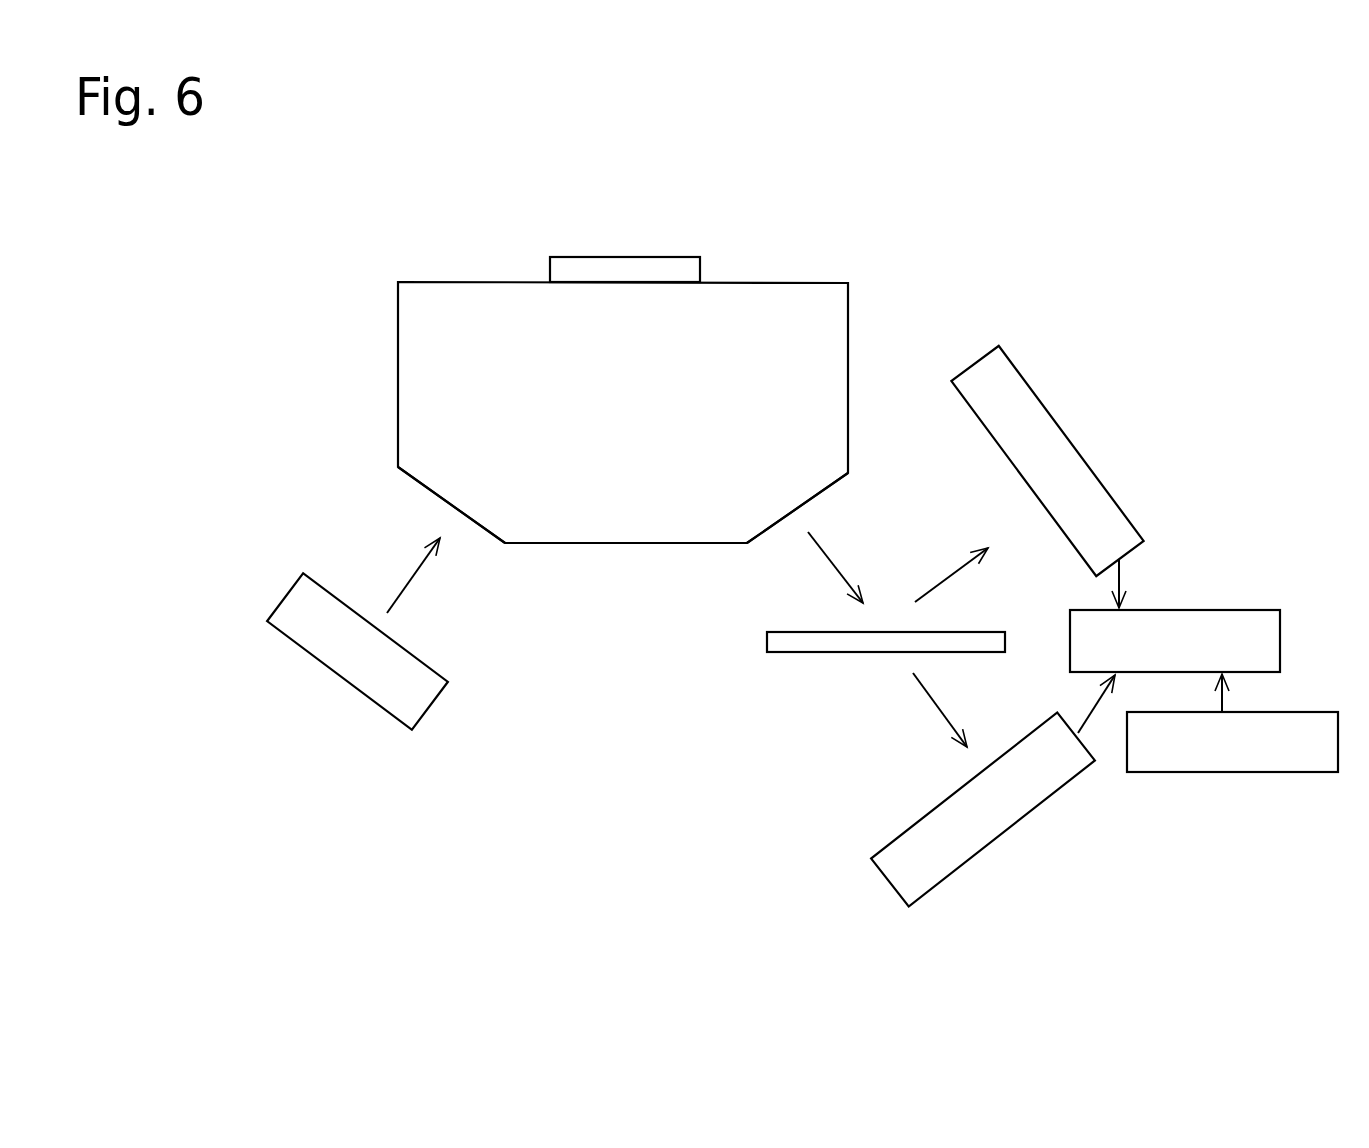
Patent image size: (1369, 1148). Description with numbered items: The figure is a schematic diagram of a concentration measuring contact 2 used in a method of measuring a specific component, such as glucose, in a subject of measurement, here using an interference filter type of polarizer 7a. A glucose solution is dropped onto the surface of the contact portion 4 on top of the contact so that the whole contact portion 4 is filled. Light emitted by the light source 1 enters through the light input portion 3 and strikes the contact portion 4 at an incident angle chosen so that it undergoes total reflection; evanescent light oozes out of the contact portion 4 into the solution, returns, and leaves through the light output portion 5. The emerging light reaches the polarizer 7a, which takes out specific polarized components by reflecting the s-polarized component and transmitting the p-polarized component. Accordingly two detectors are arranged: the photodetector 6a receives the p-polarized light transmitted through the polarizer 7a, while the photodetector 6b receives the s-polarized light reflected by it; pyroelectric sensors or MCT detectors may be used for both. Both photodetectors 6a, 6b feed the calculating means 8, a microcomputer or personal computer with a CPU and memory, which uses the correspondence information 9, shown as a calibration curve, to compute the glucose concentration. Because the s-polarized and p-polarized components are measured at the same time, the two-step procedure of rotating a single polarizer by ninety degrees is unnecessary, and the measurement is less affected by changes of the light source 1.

The light source 1 is at (342, 680).
The concentration measuring contact 2 is at (468, 305).
The light input portion 3 is at (423, 490).
The contact portion 4 is at (681, 268).
The light output portion 5 is at (828, 485).
The photodetector 6a is at (993, 840).
The photodetector 6b is at (1080, 453).
The polarizer 7a is at (795, 653).
The calculating means 8 is at (1203, 610).
The correspondence information 9 is at (1255, 772).